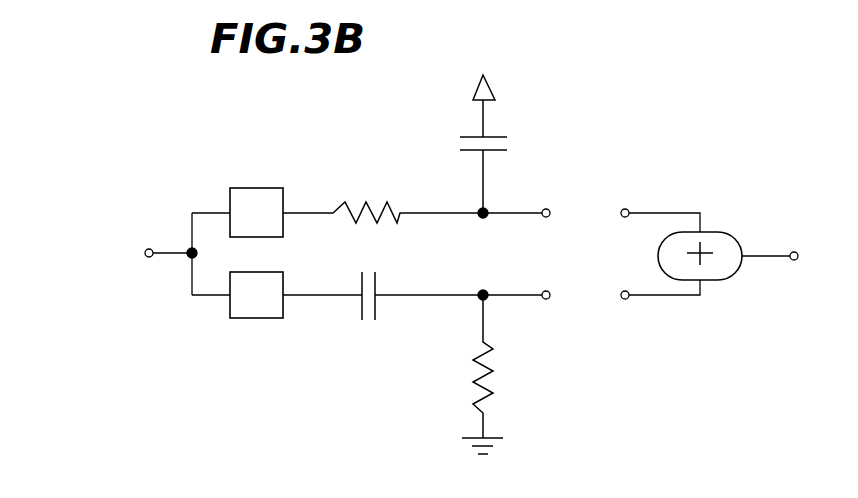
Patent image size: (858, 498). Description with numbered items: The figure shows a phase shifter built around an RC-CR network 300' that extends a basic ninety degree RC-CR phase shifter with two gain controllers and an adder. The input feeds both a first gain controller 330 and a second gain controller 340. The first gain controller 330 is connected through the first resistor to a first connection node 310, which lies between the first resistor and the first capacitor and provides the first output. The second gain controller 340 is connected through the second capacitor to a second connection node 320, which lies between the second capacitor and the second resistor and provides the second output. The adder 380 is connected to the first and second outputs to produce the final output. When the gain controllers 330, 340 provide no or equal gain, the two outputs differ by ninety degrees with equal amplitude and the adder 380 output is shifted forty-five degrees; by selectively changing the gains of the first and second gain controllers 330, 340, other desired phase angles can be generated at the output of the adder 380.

The RC-CR network 300' is at (464, 264).
The first connection node 310 is at (482, 218).
The second connection node 320 is at (482, 299).
The first gain controller 330 is at (252, 188).
The second gain controller 340 is at (248, 318).
The adder 380 is at (720, 280).